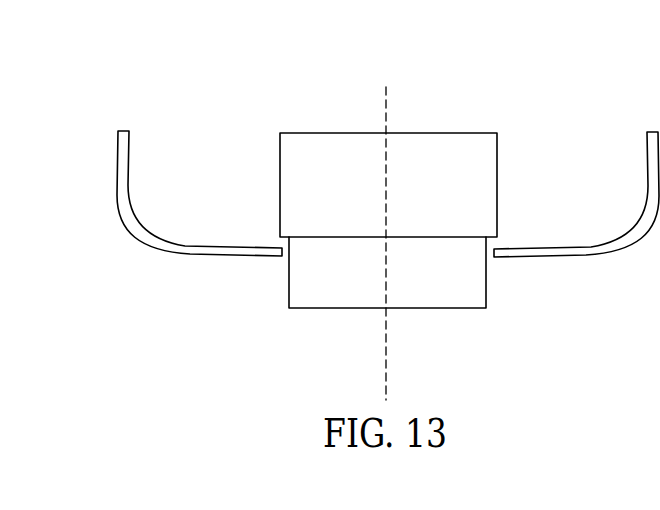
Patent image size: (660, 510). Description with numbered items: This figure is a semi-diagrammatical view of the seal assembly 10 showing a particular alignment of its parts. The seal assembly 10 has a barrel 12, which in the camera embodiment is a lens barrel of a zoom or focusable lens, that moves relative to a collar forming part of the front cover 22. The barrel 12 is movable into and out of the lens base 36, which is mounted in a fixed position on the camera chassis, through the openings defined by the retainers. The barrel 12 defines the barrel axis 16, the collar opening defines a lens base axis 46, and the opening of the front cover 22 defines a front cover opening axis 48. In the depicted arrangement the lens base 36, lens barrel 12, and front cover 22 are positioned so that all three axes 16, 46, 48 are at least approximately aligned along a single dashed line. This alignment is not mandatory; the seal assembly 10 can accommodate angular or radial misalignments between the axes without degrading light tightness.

The seal assembly 10 is at (226, 108).
The barrel 12 is at (470, 308).
The axis 16 is at (479, 238).
The front cover 22 is at (173, 255).
The lens base 36 is at (343, 133).
The lens base axis 46 is at (479, 238).
The front cover opening axis 48 is at (386, 88).